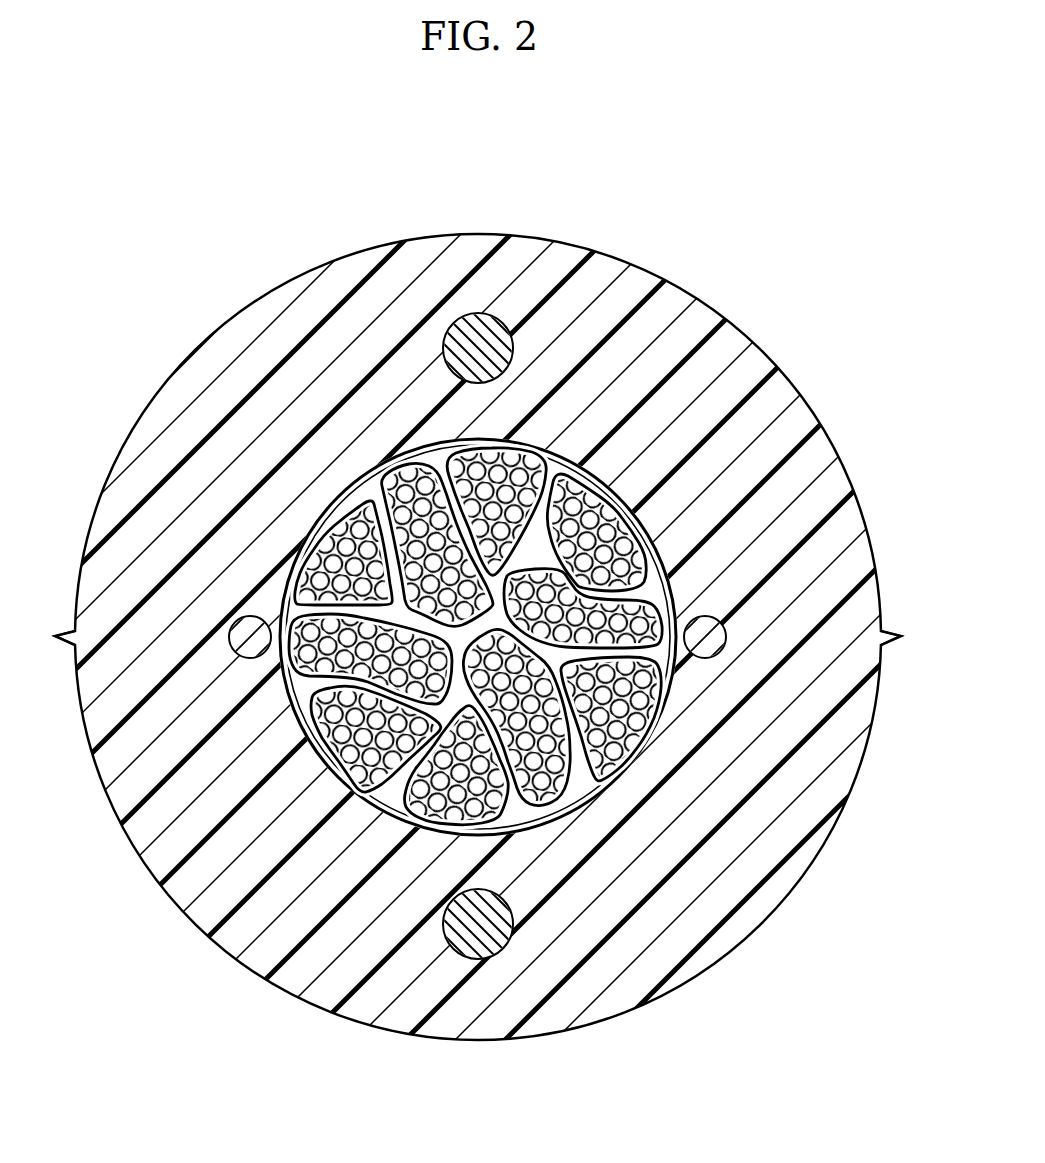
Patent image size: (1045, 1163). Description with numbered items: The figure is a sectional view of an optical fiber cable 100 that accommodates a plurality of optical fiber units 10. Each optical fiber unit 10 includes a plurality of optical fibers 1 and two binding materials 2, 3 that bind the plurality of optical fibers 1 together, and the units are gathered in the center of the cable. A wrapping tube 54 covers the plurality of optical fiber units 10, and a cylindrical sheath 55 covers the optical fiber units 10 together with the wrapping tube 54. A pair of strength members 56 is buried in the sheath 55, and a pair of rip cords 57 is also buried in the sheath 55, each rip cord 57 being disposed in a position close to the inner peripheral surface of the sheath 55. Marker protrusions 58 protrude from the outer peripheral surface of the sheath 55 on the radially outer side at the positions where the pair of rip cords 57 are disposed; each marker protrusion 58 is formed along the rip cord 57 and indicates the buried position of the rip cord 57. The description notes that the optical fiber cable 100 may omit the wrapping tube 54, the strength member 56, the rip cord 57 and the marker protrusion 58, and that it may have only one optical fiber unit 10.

The optical fiber cable 100 is at (182, 211).
The sheath 55 is at (327, 328).
The wrapping tube 54 is at (283, 710).
The strength member 56 is at (472, 942).
The rip cord 57 is at (701, 640).
The marker protrusion 58 is at (59, 640).
The optical fiber 1 is at (652, 685).
The binding material 2 is at (475, 776).
The binding material 3 is at (541, 811).
The optical fiber unit 10 is at (592, 778).